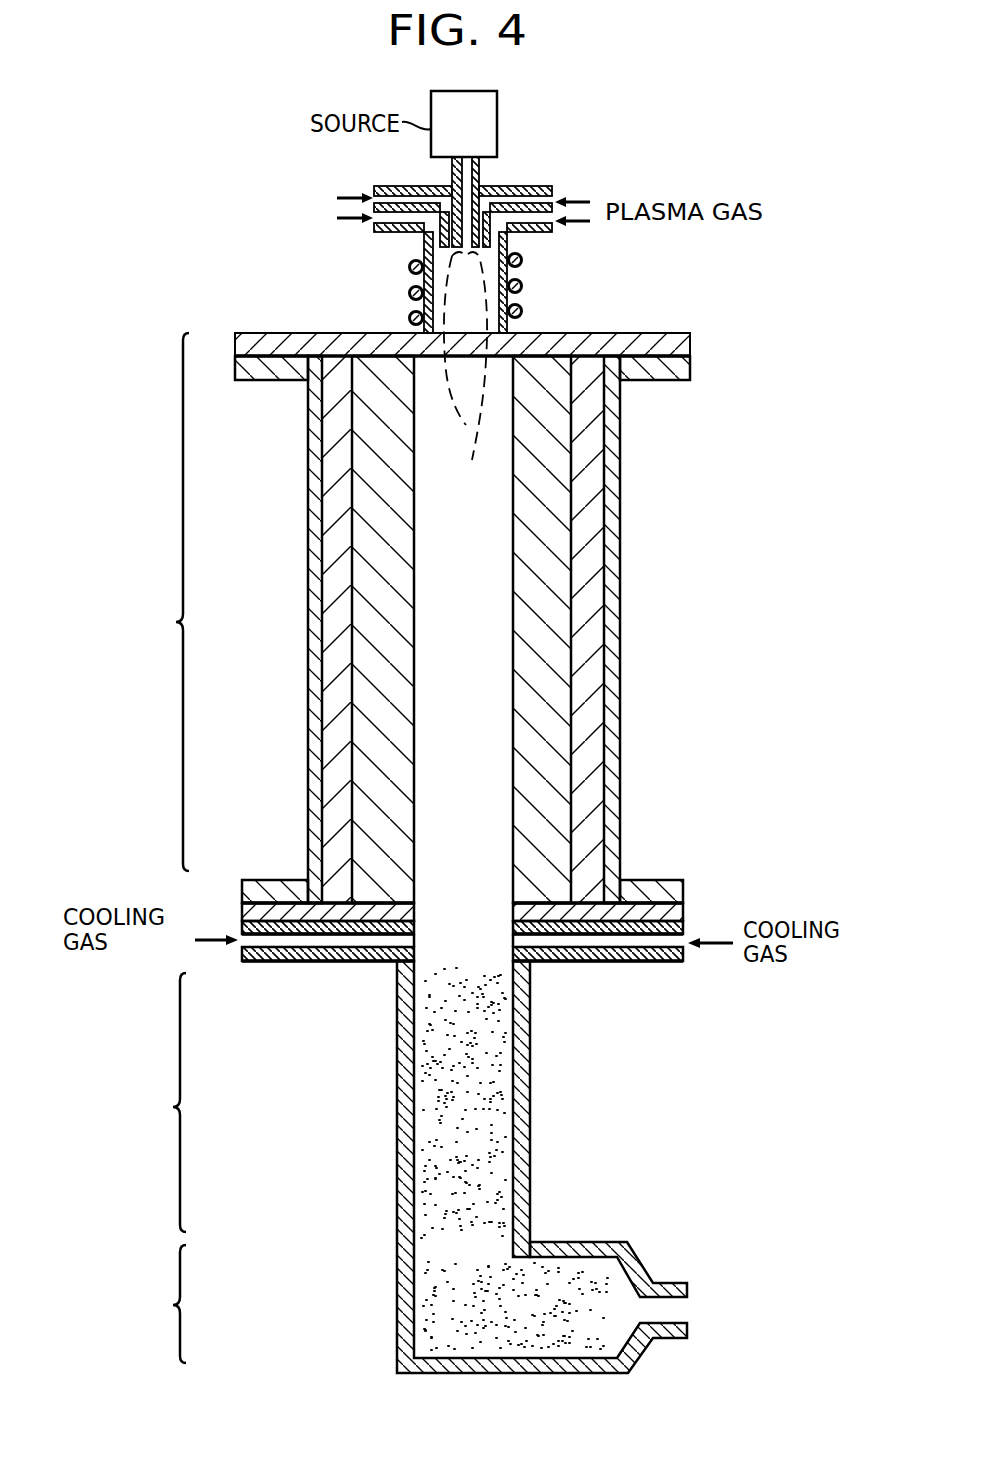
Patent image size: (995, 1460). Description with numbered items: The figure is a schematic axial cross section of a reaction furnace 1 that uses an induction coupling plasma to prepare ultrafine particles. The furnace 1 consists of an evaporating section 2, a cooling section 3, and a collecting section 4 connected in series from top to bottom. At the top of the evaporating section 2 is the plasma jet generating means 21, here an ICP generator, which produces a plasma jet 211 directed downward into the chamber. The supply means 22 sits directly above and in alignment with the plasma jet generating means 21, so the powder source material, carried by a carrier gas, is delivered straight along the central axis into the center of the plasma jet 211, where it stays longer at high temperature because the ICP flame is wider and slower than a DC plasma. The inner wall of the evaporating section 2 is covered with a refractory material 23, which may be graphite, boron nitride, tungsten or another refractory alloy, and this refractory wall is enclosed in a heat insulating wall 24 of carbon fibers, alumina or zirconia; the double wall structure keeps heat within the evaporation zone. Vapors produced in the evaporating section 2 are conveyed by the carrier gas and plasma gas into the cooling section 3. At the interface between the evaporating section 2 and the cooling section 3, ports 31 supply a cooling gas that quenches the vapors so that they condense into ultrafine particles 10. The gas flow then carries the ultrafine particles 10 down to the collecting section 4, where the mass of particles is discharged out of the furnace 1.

The reaction furnace 1 is at (445, 853).
The evaporating section 2 is at (424, 618).
The cooling section 3 is at (339, 1109).
The collecting section 4 is at (418, 1167).
The ultrafine particles 10 is at (483, 1185).
The plasma jet generating means 21 is at (384, 282).
The supply means 22 is at (487, 120).
The refractory material 23 is at (555, 727).
The heat insulating wall 24 is at (597, 622).
The ports 31 is at (408, 940).
The plasma jet 211 is at (465, 377).